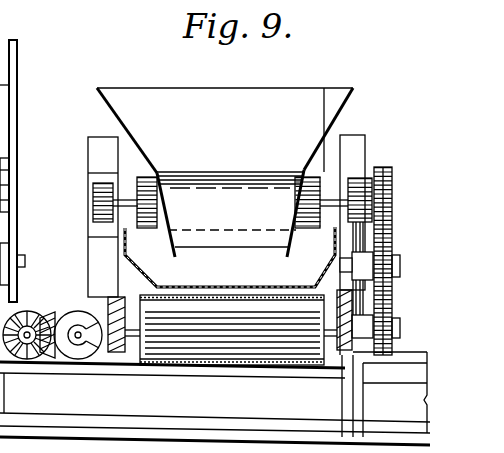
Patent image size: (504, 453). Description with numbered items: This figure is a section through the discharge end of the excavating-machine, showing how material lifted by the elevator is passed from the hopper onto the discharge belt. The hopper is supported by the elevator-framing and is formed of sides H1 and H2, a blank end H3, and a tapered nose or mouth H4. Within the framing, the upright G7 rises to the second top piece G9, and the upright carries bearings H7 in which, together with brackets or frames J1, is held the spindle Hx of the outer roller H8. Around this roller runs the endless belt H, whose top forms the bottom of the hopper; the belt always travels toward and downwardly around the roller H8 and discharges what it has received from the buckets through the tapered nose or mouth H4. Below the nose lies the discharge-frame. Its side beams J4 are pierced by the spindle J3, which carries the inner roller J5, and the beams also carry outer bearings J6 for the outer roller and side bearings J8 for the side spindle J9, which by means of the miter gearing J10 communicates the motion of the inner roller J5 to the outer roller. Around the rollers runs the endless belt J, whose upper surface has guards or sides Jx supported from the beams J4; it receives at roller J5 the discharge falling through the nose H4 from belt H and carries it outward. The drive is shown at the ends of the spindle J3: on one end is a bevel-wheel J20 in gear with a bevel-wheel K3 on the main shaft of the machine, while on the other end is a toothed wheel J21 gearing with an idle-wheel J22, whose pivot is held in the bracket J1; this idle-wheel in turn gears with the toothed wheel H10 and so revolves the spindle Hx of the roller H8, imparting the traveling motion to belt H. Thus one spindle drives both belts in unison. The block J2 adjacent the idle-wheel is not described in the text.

The endless belt H is at (230, 209).
The hopper side H1 is at (140, 130).
The hopper side H2 is at (347, 90).
The blank end H3 is at (225, 130).
The tapered nose or mouth H4 is at (232, 223).
The bearings H7 is at (93, 198).
The outer roller H8 is at (145, 183).
The toothed wheel H10 is at (392, 180).
The spindle Hx is at (128, 197).
The upright G7 is at (97, 138).
The second top piece G9 is at (350, 140).
The endless belt J is at (235, 362).
The guards or sides Jx is at (157, 273).
The brackets or frames J1 is at (366, 234).
The lower block J2 is at (390, 322).
The spindle J3 is at (133, 355).
The side beams J4 is at (108, 297).
The inner roller J5 is at (231, 330).
The outer bearings J6 is at (9, 173).
The side bearings J8 is at (88, 345).
The side spindle J9 is at (77, 345).
The miter gearing J10 is at (77, 312).
The bevel-wheel J20 is at (46, 356).
The toothed wheel J21 is at (394, 345).
The idle-wheel J22 is at (375, 285).
The bevel-wheel K3 is at (27, 325).